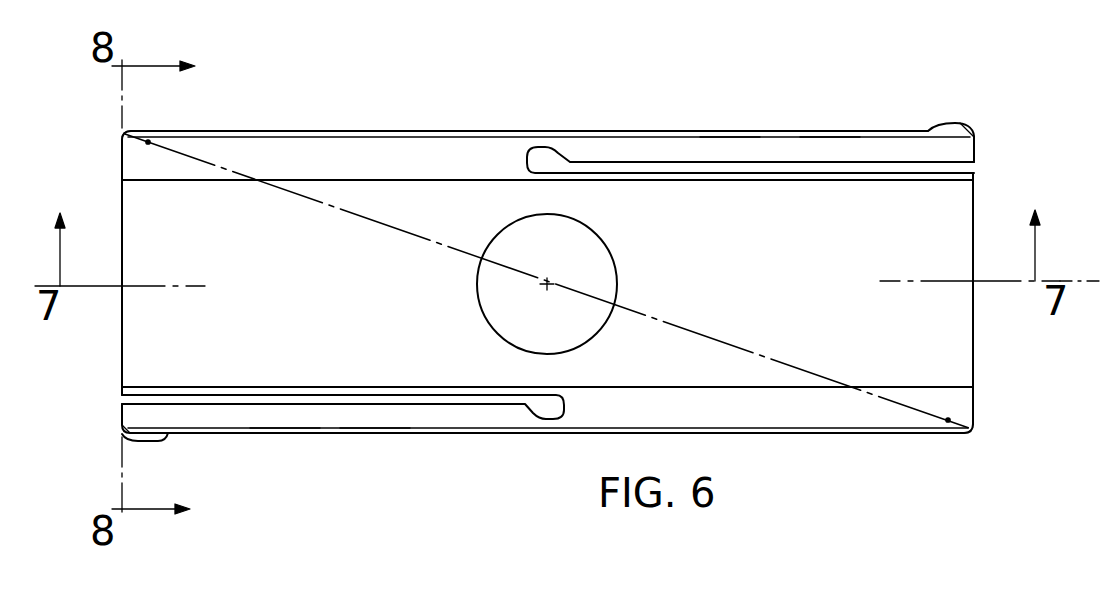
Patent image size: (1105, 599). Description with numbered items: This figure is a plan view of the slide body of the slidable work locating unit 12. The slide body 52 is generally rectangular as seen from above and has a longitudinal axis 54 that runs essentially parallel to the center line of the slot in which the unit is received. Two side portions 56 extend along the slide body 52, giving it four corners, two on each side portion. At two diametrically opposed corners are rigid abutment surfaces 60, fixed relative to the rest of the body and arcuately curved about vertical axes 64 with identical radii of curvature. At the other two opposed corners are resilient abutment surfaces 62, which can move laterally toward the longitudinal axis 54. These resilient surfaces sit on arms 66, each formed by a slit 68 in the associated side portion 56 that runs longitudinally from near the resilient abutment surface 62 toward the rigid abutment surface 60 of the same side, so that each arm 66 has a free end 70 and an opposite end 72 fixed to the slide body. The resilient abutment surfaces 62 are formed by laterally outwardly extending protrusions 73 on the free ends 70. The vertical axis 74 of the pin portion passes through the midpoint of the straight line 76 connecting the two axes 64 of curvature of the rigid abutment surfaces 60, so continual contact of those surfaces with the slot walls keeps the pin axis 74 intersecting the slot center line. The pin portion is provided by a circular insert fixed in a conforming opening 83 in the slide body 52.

The slidable work locating unit 12 is at (395, 129).
The slide body 52 is at (958, 258).
The longitudinal axis 54 is at (1097, 282).
The side portions 56 is at (483, 150).
The rigid abutment surfaces 60 is at (127, 138).
The resilient abutment surfaces 62 is at (970, 130).
The vertical axes 64 is at (148, 148).
The arms 66 is at (730, 150).
The slit 68 is at (830, 163).
The free end 70 is at (967, 148).
The opposite end 72 is at (567, 152).
The protrusions 73 is at (948, 123).
The vertical axis of the pin portion 74 is at (548, 283).
The straight line 76 is at (733, 345).
The opening 83 is at (495, 288).